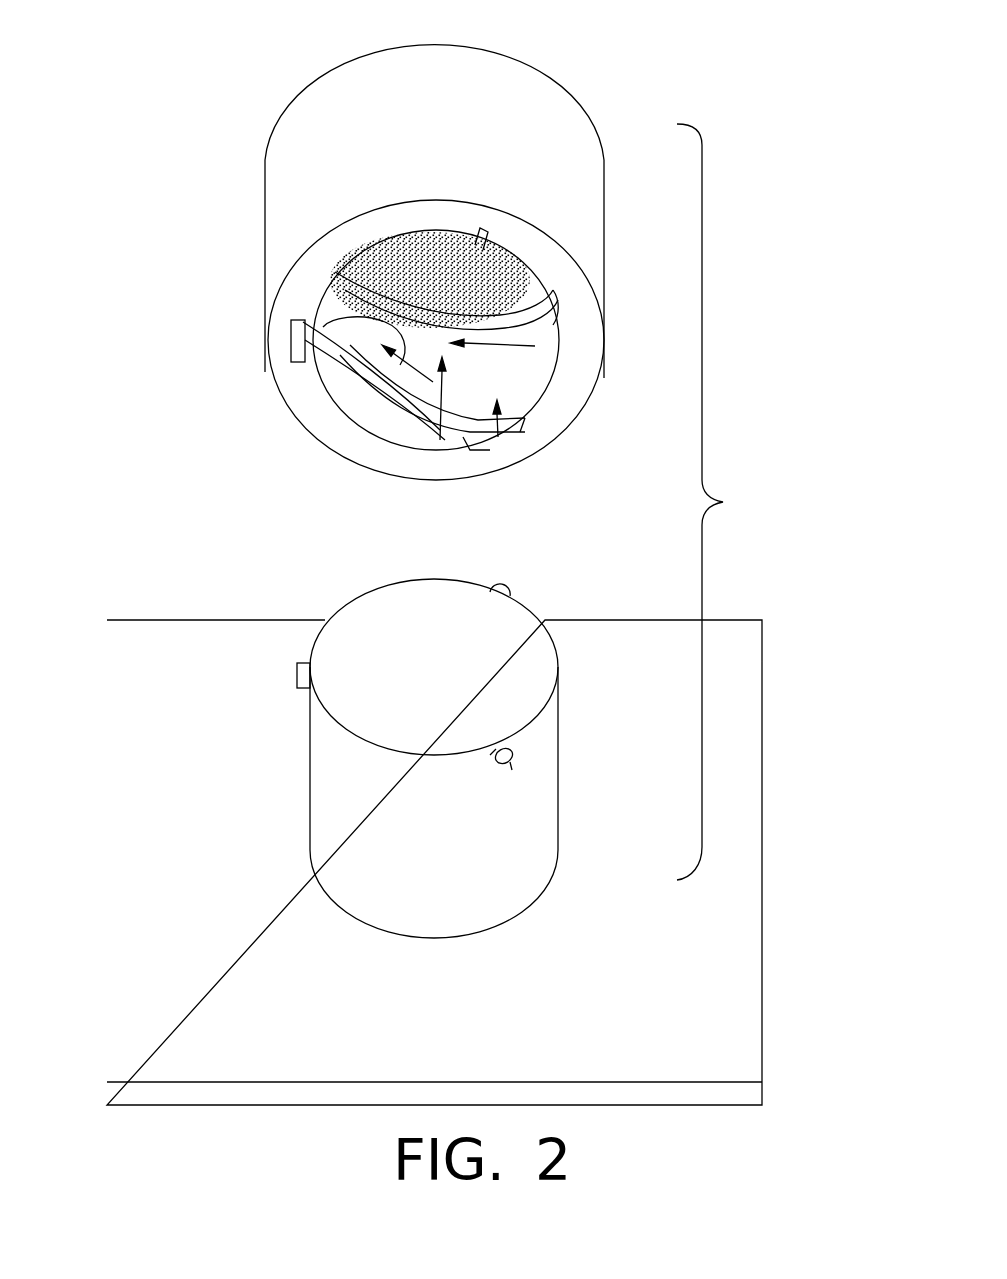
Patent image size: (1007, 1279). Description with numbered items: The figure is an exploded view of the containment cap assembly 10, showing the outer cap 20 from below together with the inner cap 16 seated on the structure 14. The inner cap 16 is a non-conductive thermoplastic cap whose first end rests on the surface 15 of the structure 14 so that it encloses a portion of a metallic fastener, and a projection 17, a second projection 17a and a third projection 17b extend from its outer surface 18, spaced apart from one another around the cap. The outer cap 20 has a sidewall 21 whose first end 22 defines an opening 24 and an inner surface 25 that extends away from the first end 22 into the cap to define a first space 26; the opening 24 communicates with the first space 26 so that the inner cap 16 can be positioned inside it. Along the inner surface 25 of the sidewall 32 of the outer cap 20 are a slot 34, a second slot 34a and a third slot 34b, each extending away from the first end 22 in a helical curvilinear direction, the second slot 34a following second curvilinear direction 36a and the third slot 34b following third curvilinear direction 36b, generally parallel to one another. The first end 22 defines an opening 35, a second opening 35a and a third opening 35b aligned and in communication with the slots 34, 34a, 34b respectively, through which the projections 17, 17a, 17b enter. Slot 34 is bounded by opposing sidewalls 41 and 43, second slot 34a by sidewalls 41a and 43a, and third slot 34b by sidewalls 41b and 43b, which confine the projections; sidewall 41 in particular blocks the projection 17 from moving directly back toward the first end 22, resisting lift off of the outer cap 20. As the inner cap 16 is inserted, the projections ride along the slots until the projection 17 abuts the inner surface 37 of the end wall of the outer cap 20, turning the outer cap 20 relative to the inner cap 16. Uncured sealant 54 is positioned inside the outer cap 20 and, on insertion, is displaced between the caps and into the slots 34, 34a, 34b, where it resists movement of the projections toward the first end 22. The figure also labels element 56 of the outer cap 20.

The containment cap assembly 10 is at (723, 502).
The structure 14 is at (702, 905).
The surface of structure 15 is at (715, 1007).
The inner cap 16 is at (336, 817).
The projection 17 is at (297, 678).
The second projection 17a is at (503, 768).
The third projection 17b is at (503, 583).
The outer surface of inner cap 18 is at (412, 878).
The outer cap 20 is at (292, 185).
The sidewall 21 is at (480, 85).
The first end 22 is at (325, 420).
The opening 24 is at (478, 438).
The inner surface 25 is at (545, 383).
The first space 26 is at (447, 415).
The sidewall of outer cap 32 is at (525, 245).
The slot 34 is at (292, 363).
The second slot 34a is at (550, 300).
The third slot 34b is at (325, 403).
The opening of slot 35 is at (286, 300).
The second opening 35a is at (466, 220).
The third opening 35b is at (548, 439).
The second curvilinear direction 36a is at (555, 335).
The third curvilinear direction 36b is at (291, 337).
The inner surface of end wall 37 is at (548, 262).
The sidewall of slot 41 is at (293, 360).
The sidewall of second slot 41a is at (548, 327).
The sidewall of third slot 41b is at (440, 442).
The sidewall of slot 43 is at (290, 323).
The sidewall of second slot 43a is at (545, 282).
The sidewall of third slot 43b is at (467, 420).
The uncured sealant 54 is at (458, 252).
The sensing element 56 is at (392, 262).